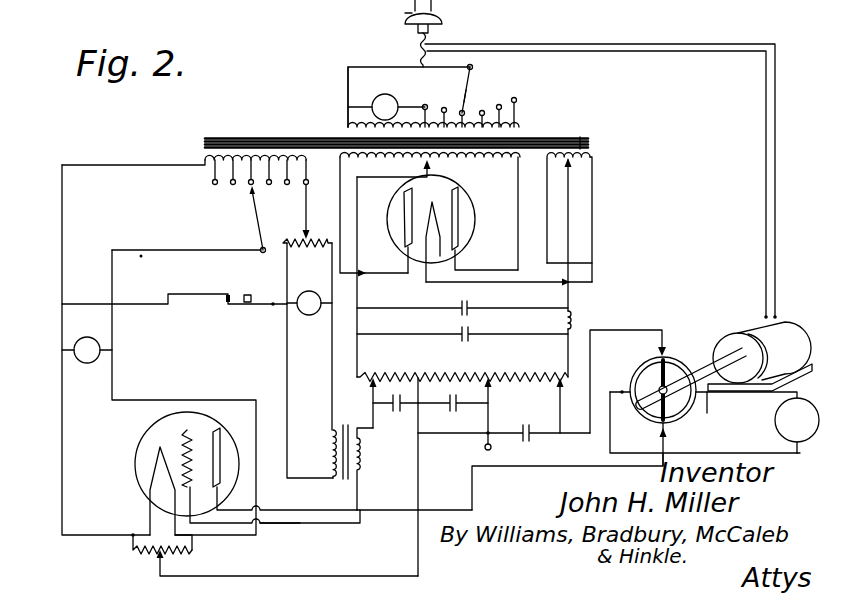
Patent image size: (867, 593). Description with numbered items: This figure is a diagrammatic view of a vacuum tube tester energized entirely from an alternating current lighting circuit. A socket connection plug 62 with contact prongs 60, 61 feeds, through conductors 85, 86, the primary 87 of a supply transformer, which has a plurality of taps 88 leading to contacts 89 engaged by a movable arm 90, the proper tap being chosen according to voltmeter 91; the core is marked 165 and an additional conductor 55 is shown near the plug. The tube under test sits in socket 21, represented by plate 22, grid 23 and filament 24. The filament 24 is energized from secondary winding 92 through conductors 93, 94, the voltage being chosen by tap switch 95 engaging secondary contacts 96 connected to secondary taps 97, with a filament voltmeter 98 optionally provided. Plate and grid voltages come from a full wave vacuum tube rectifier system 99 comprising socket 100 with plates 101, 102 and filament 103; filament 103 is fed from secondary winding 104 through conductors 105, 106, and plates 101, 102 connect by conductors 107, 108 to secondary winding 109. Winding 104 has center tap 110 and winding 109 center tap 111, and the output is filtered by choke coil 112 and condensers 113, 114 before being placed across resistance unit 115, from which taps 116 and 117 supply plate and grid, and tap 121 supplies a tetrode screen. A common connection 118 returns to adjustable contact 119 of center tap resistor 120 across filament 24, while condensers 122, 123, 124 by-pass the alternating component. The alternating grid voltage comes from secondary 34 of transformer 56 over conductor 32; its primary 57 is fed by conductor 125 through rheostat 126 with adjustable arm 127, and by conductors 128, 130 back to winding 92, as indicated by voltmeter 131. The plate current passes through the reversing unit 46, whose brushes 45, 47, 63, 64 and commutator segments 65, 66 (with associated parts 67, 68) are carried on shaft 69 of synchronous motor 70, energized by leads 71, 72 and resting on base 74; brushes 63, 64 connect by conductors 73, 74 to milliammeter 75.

The vacuum tube socket 21 is at (200, 423).
The plate 22 is at (216, 450).
The grid 23 is at (185, 432).
The filament 24 is at (152, 470).
The conductor 32 is at (322, 524).
The transformer secondary 34 is at (362, 448).
The brush 45 is at (667, 436).
The reversing unit 46 is at (695, 346).
The brush 47 is at (680, 345).
The conductor 55 is at (343, 10).
The transformer 56 is at (343, 476).
The transformer primary 57 is at (330, 432).
The contact prong 60 is at (405, 13).
The contact prong 61 is at (442, 9).
The socket connection plug 62 is at (433, 28).
The brush 63 is at (621, 396).
The brush 64 is at (708, 400).
The commutator segment 65 is at (648, 357).
The commutator segment 66 is at (650, 424).
The relay coil circuit conductor 67 is at (634, 368).
The relay contact 68 is at (688, 409).
The motor shaft 69 is at (717, 361).
The synchronous A. C. motor 70 is at (762, 313).
The motor supply lead 71 is at (768, 143).
The motor supply lead 72 is at (778, 117).
The conductor 73 is at (727, 451).
The conductor 74 is at (753, 392).
The measuring instrument 75 is at (801, 398).
The conductor 85 is at (363, 65).
The conductor 86 is at (477, 63).
The supply transformer primary 87 is at (353, 123).
The tap 88 is at (445, 108).
The contact 89 is at (425, 105).
The movable arm 90 is at (472, 90).
The voltmeter 91 is at (378, 97).
The secondary winding 92 is at (257, 155).
The conductor 93 is at (63, 215).
The conductor 94 is at (155, 250).
The tap switch 95 is at (257, 220).
The secondary contact 96 is at (215, 186).
The secondary tap 97 is at (215, 175).
The filament voltmeter 98 is at (97, 340).
The full wave vacuum tube rectifier system 99 is at (498, 257).
The rectifier socket 100 is at (465, 213).
The rectifier plate 101 is at (403, 202).
The rectifier plate 102 is at (458, 235).
The rectifier filament 103 is at (427, 213).
The filament secondary winding 104 is at (587, 133).
The conductor 105 is at (592, 263).
The conductor 106 is at (595, 190).
The conductor 107 is at (337, 205).
The conductor 108 is at (518, 183).
The plate secondary winding 109 is at (465, 163).
The center tap 110 is at (582, 168).
The center tap 111 is at (358, 215).
The choke coil 112 is at (582, 318).
The condenser 113 is at (476, 307).
The condenser 114 is at (473, 328).
The resistance unit 115 is at (453, 365).
The plate tap 116 is at (560, 405).
The grid tap 117 is at (372, 393).
The common connection 118 is at (417, 485).
The adjustable contact 119 is at (163, 570).
The center tap resistor 120 is at (158, 545).
The screen tap 121 is at (503, 403).
The condenser 122 is at (392, 410).
The condenser 123 is at (451, 410).
The condenser 124 is at (520, 440).
The conductor 125 is at (332, 345).
The rheostat 126 is at (261, 253).
The adjustable arm 127 is at (300, 230).
The conductor 128 is at (287, 343).
The conductor 130 is at (143, 302).
The voltmeter 131 is at (310, 290).
The transformer core 165 is at (530, 130).